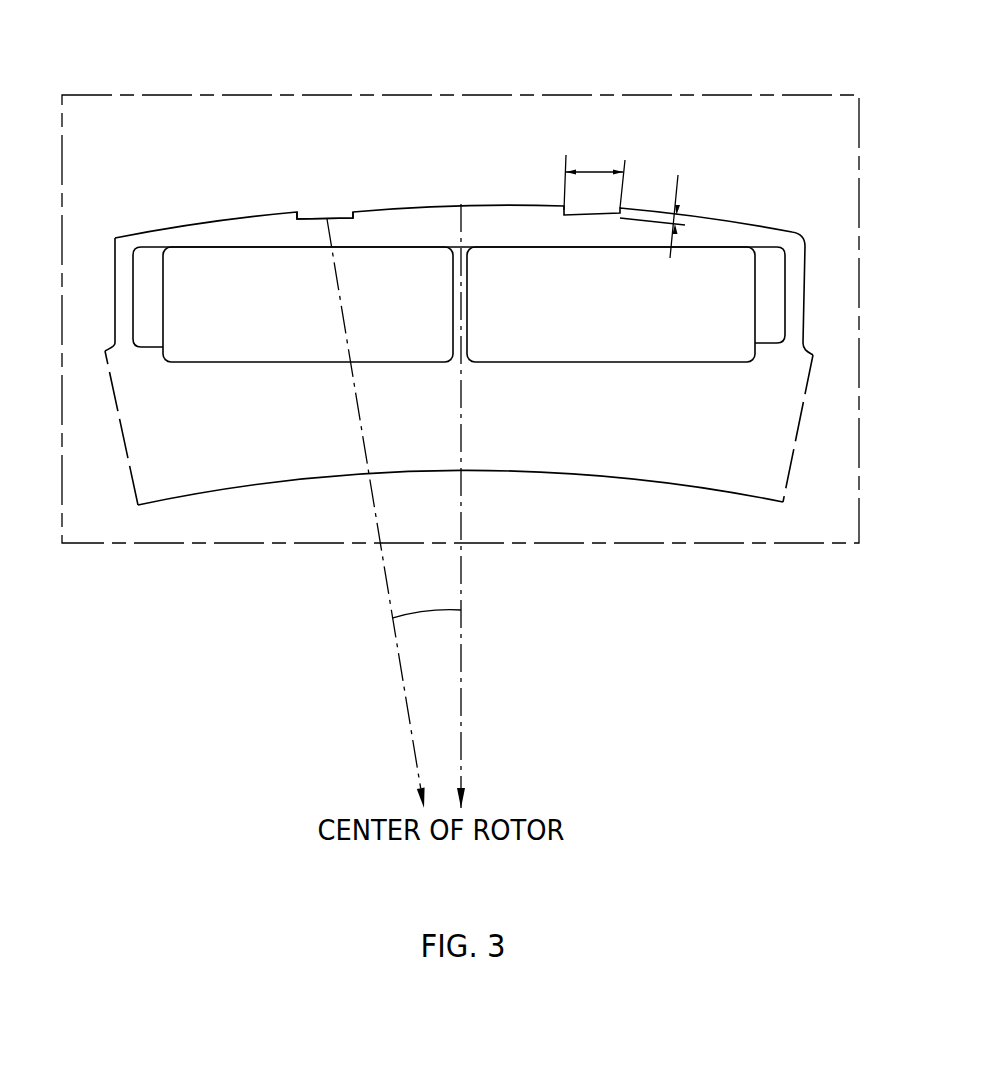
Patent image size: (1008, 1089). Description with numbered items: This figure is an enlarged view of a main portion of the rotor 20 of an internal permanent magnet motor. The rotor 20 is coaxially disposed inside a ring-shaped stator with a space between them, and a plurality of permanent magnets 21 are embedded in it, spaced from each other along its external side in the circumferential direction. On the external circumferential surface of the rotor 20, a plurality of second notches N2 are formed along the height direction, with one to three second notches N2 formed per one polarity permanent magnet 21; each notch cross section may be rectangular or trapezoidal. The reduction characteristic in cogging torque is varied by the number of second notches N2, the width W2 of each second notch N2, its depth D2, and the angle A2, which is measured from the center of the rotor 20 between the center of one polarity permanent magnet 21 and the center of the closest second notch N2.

The rotor 20 is at (652, 457).
The permanent magnet 21 is at (252, 265).
The second notch N2 is at (340, 217).
The width of the second notch W2 is at (594, 170).
The depth of the second notch D2 is at (669, 211).
The angle between the second notches A2 is at (426, 598).